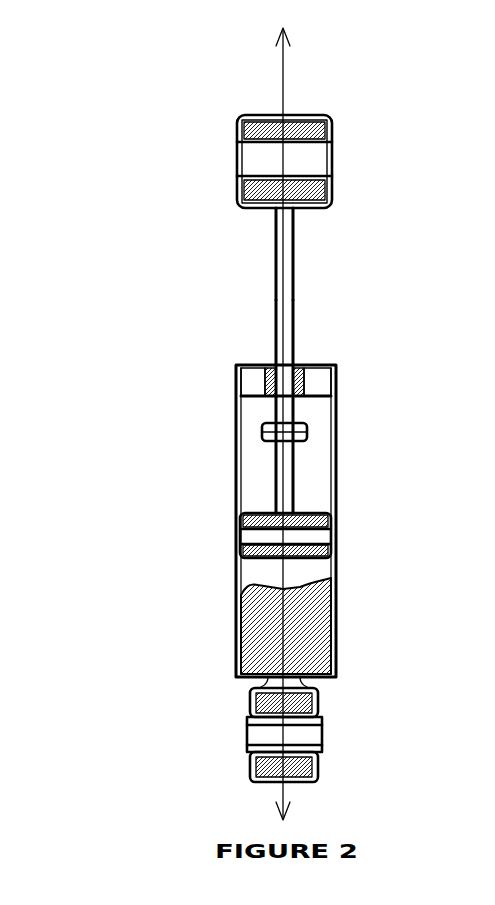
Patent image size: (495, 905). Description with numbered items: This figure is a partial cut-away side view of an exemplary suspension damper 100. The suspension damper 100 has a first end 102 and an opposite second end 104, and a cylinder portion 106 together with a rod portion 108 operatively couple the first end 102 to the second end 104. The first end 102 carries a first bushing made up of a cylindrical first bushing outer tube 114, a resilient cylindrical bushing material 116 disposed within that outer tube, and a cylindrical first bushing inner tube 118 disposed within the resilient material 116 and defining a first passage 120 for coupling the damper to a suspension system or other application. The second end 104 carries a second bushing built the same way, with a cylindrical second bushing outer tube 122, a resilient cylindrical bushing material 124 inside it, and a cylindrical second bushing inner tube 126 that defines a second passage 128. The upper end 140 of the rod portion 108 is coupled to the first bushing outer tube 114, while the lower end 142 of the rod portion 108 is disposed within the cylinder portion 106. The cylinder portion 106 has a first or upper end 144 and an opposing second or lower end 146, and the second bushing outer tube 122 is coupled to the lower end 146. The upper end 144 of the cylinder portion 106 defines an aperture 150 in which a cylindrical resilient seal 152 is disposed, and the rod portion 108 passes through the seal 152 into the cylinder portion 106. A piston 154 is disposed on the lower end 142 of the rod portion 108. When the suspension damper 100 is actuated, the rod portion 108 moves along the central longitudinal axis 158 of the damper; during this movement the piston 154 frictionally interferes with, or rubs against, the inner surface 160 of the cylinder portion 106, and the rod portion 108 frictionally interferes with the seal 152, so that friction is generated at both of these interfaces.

The suspension damper 100 is at (68, 110).
The first end 102 is at (312, 116).
The second end 104 is at (300, 785).
The cylinder portion 106 is at (336, 641).
The rod portion 108 is at (294, 256).
The first bushing outer tube 114 is at (327, 122).
The resilient cylindrical bushing material 116 is at (328, 132).
The first bushing inner tube 118 is at (327, 181).
The first passage 120 is at (232, 160).
The second bushing outer tube 122 is at (318, 780).
The resilient cylindrical bushing material 124 is at (322, 752).
The second bushing inner tube 126 is at (322, 722).
The second passage 128 is at (232, 735).
The upper end 140 is at (275, 240).
The lower end 142 is at (293, 490).
The upper end 144 is at (235, 383).
The lower end 146 is at (236, 650).
The aperture 150 is at (267, 334).
The seal 152 is at (300, 365).
The piston 154 is at (336, 529).
The central longitudinal axis 158 is at (284, 59).
The inner surface 160 is at (240, 484).